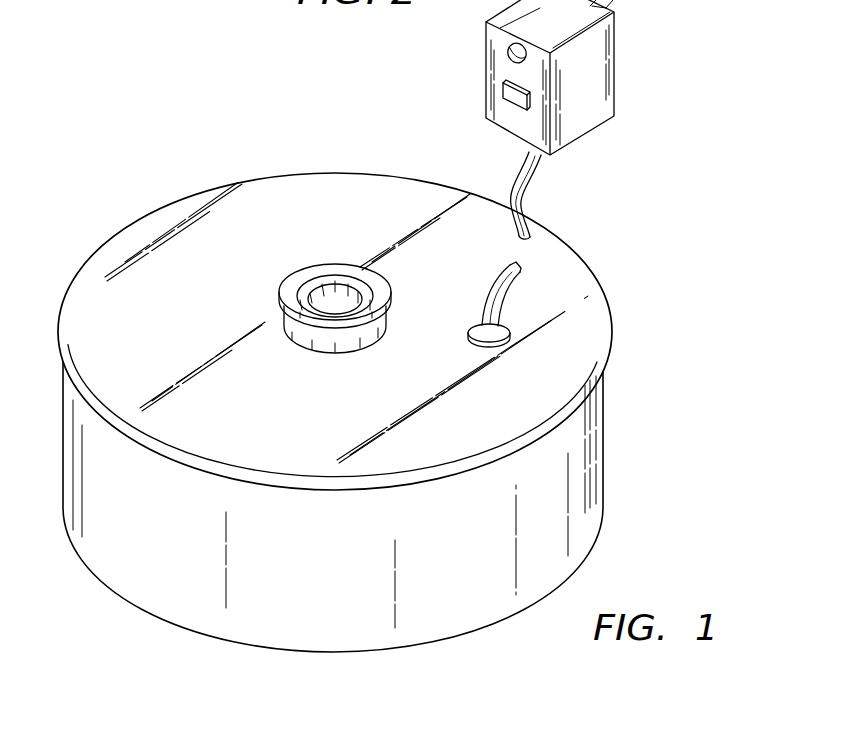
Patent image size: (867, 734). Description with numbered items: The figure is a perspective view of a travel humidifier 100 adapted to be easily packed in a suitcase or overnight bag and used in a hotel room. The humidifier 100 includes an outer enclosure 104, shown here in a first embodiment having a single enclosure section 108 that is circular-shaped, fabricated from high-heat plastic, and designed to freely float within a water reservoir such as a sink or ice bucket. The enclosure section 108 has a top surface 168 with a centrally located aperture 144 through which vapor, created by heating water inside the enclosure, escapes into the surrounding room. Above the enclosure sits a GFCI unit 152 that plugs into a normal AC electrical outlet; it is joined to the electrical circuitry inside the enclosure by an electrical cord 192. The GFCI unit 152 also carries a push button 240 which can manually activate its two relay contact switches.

The travel humidifier 100 is at (326, 391).
The outer enclosure 104 is at (335, 291).
The enclosure section 108 is at (597, 325).
The aperture 144 is at (335, 296).
The GFCI unit 152 is at (605, 80).
The top surface 168 is at (213, 320).
The electrical cord 192 is at (535, 178).
The push button 240 is at (505, 98).